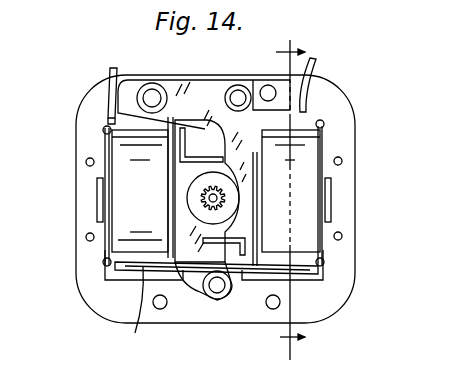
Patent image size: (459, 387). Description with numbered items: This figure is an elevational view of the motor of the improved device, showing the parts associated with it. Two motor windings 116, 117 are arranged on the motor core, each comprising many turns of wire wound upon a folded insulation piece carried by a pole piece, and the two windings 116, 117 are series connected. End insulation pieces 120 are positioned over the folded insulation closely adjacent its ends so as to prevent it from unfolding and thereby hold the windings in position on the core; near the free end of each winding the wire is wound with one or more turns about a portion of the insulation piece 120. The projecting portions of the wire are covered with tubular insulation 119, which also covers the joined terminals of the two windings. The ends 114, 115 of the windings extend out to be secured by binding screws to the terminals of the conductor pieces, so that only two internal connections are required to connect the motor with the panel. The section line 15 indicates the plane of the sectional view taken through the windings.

The lead wire 114 is at (316, 62).
The lead wire 115 is at (118, 66).
The coil 116 is at (305, 170).
The coil 117 is at (103, 167).
The crossbar 119 is at (138, 307).
The frame plate 120 is at (102, 245).
The section line 15- 15 is at (290, 194).